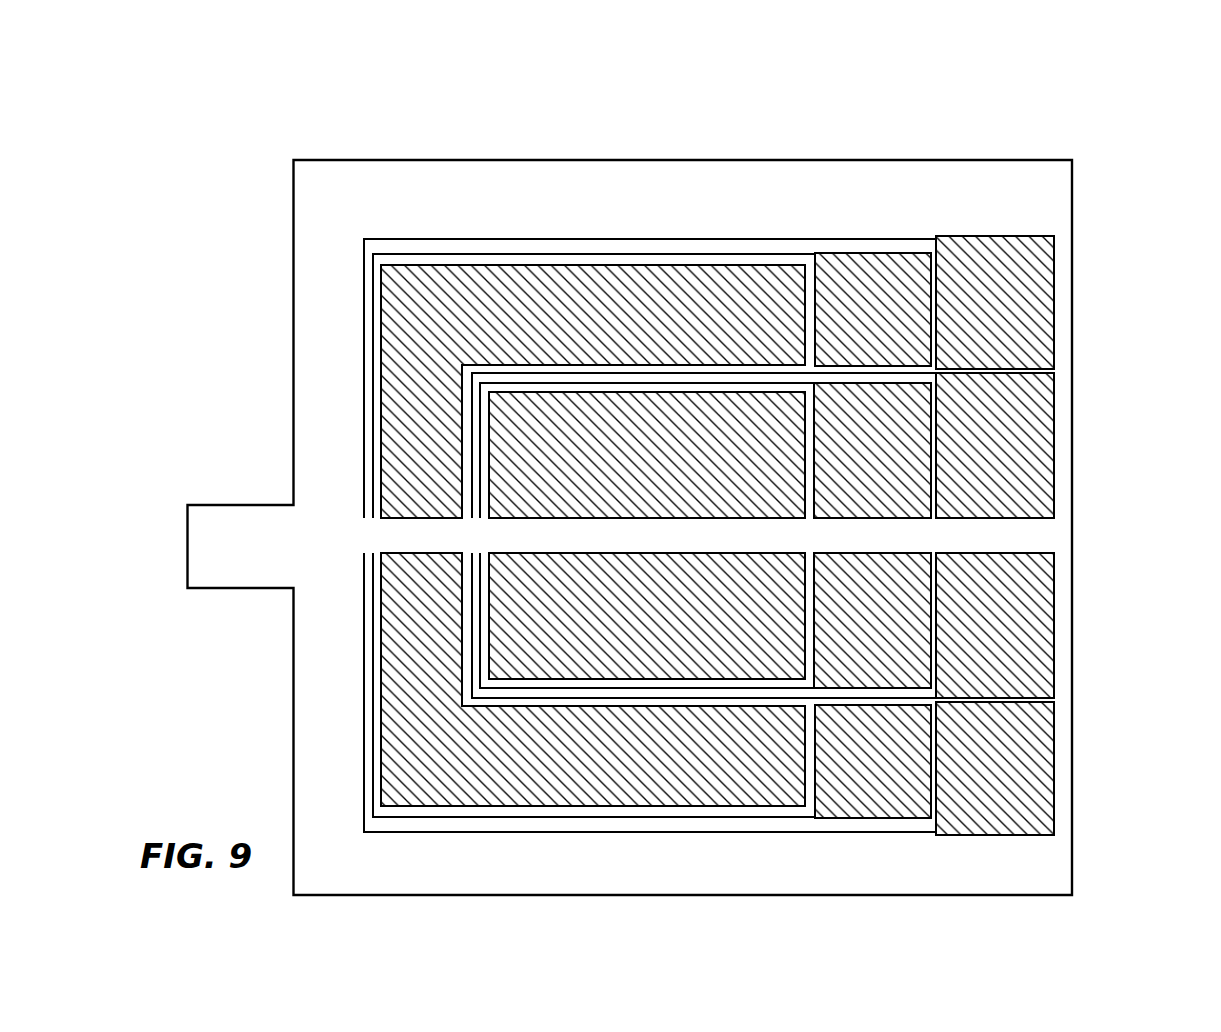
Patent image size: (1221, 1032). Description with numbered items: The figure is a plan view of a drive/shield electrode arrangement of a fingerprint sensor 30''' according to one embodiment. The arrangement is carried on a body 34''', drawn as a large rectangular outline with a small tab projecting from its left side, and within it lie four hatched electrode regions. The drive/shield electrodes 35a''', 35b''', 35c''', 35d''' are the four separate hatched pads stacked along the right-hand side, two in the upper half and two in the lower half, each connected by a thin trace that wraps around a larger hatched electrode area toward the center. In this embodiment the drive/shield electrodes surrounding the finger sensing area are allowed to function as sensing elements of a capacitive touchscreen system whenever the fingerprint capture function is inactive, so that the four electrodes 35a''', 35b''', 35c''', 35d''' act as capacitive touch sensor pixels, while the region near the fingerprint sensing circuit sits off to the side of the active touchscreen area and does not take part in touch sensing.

The sensor device 30''' is at (702, 474).
The substrate 34''' is at (673, 484).
The drive/shield electrode 35a''' is at (1071, 302).
The drive/shield electrode 35b''' is at (1076, 445).
The drive/shield electrode 35c''' is at (1070, 625).
The drive/shield electrode 35d''' is at (1065, 768).